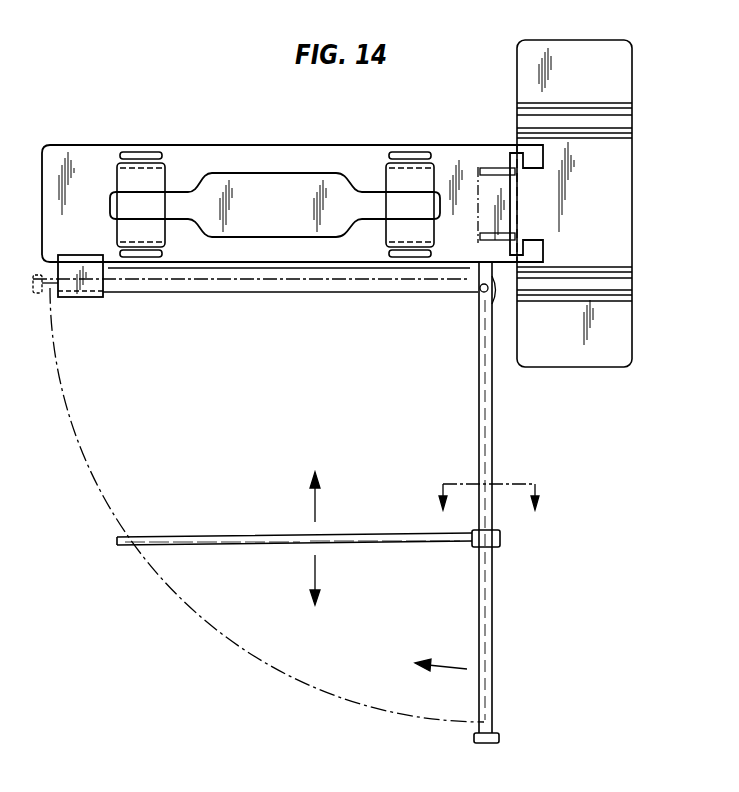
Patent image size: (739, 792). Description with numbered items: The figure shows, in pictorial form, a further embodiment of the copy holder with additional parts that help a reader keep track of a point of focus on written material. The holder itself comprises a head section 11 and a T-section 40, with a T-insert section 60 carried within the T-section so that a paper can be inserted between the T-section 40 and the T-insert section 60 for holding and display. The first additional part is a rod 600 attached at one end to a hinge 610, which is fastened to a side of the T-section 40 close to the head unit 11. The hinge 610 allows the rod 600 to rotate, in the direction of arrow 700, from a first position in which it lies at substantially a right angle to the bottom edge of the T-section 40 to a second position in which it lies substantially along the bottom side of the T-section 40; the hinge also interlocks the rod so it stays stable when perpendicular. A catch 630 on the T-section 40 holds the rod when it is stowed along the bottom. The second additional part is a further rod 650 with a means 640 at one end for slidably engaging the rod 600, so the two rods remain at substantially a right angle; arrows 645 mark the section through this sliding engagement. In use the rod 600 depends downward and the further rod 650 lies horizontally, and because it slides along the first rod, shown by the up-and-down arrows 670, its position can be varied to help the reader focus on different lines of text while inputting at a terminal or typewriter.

The head section 11 is at (637, 148).
The T-section 40 is at (405, 147).
The T-insert section 60 is at (277, 182).
The rod 600 is at (493, 617).
The hinge 610 is at (480, 297).
The catch 630 is at (92, 297).
The means for slidably engaging 640 is at (500, 540).
The arrows 645 is at (535, 484).
The further rod 650 is at (175, 537).
The vertical motion arrows 670 is at (312, 578).
The arrow 700 is at (445, 666).